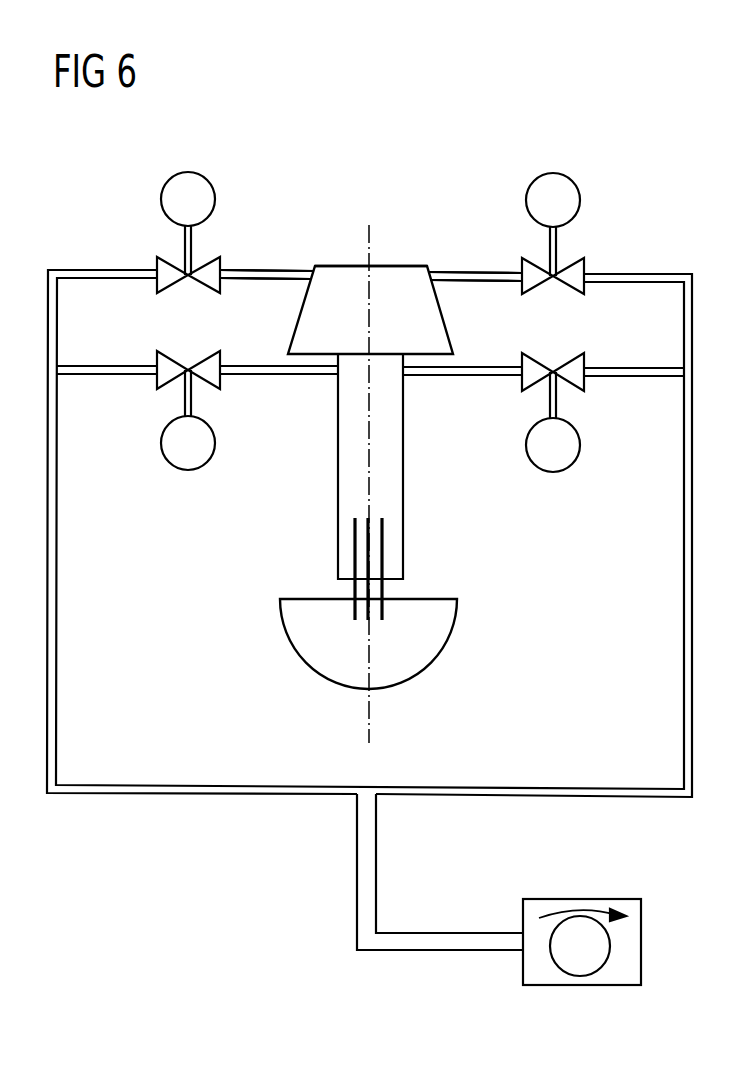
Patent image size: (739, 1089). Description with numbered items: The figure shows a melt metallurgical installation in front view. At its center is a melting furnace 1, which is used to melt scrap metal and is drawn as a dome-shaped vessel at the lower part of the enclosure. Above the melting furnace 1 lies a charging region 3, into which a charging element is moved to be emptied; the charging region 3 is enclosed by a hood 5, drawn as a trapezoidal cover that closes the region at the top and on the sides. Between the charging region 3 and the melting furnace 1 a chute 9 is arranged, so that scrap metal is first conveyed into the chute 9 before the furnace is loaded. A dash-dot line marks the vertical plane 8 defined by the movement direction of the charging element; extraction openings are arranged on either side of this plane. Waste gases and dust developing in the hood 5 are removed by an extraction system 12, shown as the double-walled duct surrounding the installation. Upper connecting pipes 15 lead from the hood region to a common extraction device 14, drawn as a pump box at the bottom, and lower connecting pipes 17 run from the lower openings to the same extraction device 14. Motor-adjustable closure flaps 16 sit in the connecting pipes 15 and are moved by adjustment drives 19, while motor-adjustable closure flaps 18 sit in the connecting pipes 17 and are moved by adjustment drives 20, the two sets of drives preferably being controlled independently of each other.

The melting furnace 1 is at (468, 654).
The charging region 3 is at (396, 280).
The hood 5 is at (348, 265).
The vertical plane 8 is at (369, 725).
The chute 9 is at (392, 462).
The extraction system 12 is at (98, 203).
The extraction device 14 is at (582, 987).
The connecting pipes 15 is at (275, 271).
The closure flaps 16 is at (198, 284).
The connecting pipes 17 is at (272, 375).
The closure flaps 18 is at (212, 354).
The adjustment drives 19 is at (216, 196).
The adjustment drives 20 is at (161, 443).